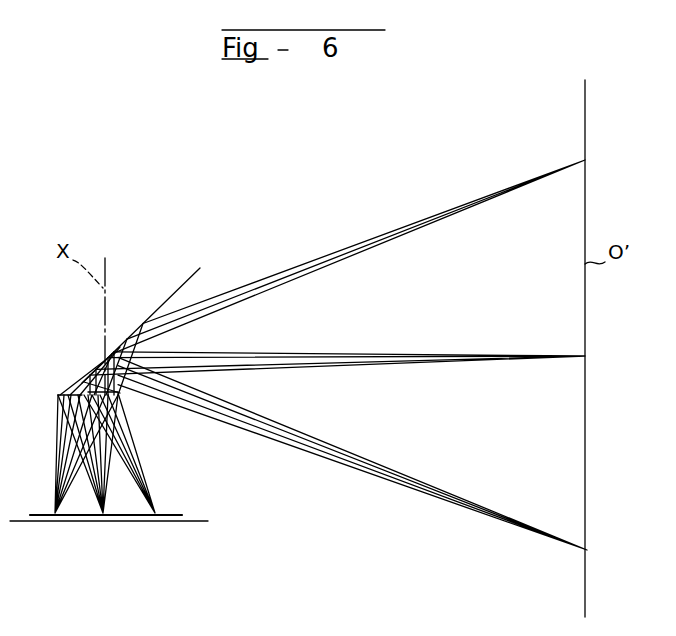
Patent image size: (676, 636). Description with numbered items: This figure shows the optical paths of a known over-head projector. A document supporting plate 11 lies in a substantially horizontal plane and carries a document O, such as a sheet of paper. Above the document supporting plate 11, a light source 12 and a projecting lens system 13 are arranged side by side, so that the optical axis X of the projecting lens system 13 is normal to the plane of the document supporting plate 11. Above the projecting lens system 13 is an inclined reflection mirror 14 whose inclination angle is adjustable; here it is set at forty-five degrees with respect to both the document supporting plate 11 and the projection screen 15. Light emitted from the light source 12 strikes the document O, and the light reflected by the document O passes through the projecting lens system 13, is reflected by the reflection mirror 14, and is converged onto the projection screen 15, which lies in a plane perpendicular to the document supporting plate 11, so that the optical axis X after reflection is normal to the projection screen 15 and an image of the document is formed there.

The document supporting plate 11 is at (193, 523).
The light source 12 is at (66, 393).
The projecting lens system 13 is at (118, 393).
The reflection mirror 14 is at (177, 286).
The projection screen 15 is at (585, 104).
The document O is at (169, 512).